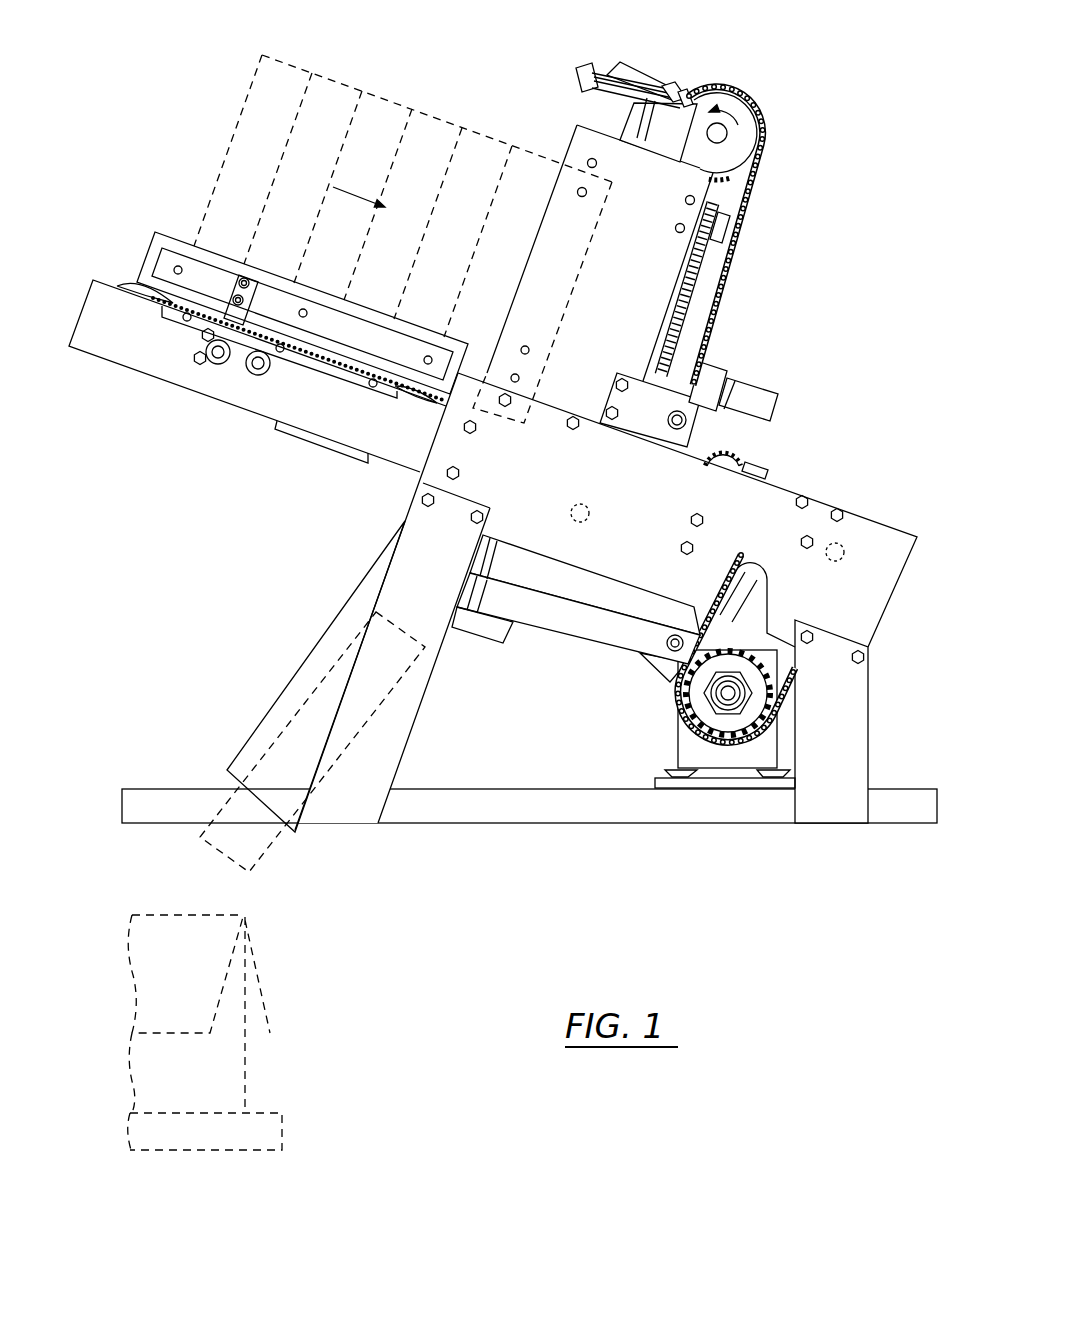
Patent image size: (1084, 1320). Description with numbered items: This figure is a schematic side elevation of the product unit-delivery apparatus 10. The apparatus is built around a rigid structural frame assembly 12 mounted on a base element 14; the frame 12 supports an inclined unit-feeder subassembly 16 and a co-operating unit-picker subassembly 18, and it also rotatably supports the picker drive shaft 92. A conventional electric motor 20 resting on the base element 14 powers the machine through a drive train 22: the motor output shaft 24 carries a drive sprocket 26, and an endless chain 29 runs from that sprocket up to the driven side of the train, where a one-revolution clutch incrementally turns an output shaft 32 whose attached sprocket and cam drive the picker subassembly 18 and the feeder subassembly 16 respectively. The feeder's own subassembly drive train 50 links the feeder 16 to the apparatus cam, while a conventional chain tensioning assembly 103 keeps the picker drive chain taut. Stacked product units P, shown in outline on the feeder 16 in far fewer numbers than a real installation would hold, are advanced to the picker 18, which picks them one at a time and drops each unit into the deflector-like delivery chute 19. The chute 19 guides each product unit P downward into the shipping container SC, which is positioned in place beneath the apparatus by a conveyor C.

The product unit-delivery apparatus 10 is at (806, 288).
The rigid structural frame assembly 12 is at (427, 540).
The base element 14 is at (670, 812).
The unit-feeder subassembly 16 is at (110, 283).
The unit-picker subassembly 18 is at (760, 110).
The delivery chute 19 is at (275, 725).
The electric motor 20 is at (693, 748).
The drive train 22 is at (678, 693).
The output shaft 24 is at (729, 690).
The drive sprocket 26 is at (745, 723).
The endless chain 29 is at (717, 742).
The output shaft 32 is at (843, 543).
The subassembly drive train 50 is at (565, 625).
The drive shaft 92 is at (588, 511).
The chain tensioning assembly 103 is at (745, 463).
The product unit P is at (385, 113).
The shipping container SC is at (230, 1020).
The conveyor C is at (272, 1128).